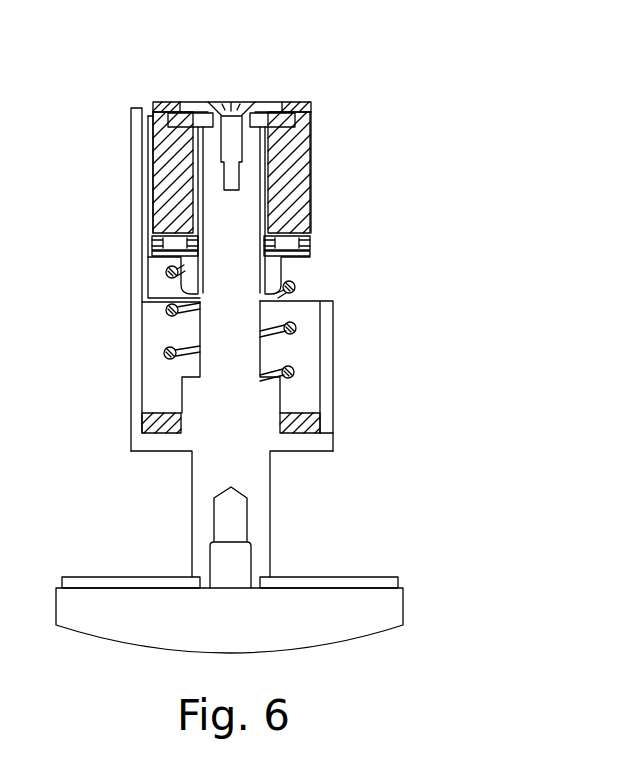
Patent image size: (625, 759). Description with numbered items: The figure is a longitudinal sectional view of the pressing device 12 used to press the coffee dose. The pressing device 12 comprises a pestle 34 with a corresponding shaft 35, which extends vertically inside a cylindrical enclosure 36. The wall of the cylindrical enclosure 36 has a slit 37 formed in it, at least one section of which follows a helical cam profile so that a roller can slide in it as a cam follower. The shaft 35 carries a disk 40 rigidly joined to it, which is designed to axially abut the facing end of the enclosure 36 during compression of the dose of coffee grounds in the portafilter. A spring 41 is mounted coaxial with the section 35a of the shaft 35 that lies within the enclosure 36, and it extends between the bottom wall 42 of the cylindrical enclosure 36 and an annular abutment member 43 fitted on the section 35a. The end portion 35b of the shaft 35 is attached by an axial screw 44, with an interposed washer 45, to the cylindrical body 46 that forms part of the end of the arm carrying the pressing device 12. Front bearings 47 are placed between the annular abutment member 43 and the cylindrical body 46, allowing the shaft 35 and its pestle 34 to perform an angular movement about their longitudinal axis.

The pressing device 12 is at (417, 295).
The pestle 34 is at (343, 630).
The shaft 35 is at (258, 497).
The section of the shaft 35a is at (248, 313).
The end portion of the shaft 35b is at (253, 177).
The cylindrical enclosure 36 is at (135, 357).
The slit 37 is at (305, 277).
The disk 40 is at (312, 447).
The spring 41 is at (296, 325).
The bottom wall 42 is at (153, 420).
The annular abutment member 43 is at (178, 284).
The axial screw 44 is at (230, 143).
The washer 45 is at (287, 105).
The cylindrical body 46 is at (165, 170).
The front bearings 47 is at (165, 243).